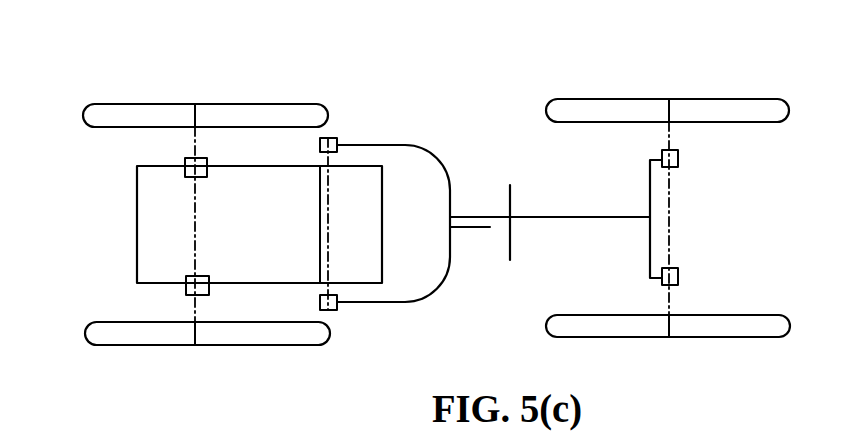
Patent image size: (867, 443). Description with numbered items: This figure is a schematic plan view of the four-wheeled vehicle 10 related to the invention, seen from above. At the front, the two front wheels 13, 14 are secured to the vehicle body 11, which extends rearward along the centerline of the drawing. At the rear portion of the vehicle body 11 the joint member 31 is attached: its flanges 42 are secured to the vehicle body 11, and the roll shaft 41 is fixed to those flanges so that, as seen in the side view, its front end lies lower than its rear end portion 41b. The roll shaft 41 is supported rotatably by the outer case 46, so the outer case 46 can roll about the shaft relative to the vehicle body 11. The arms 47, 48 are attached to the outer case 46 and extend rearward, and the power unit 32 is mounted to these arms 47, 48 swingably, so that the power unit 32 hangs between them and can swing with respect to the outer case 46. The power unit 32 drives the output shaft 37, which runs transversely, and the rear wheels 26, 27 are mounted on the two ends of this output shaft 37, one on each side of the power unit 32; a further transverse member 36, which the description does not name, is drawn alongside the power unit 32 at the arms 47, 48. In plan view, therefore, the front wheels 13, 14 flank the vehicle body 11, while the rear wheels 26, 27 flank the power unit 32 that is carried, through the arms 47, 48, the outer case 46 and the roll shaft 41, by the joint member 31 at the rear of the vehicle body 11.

The four-wheeled vehicle 10 is at (411, 220).
The vehicle body 11 is at (583, 217).
The front wheel 13 is at (732, 99).
The front wheel 14 is at (740, 337).
The rear wheel 26 is at (228, 104).
The rear wheel 27 is at (232, 345).
The joint member 31 is at (438, 215).
The power unit 32 is at (137, 215).
The drive axle 36 is at (327, 272).
The output shaft 37 is at (197, 307).
The roll shaft 41 is at (497, 214).
The rear end portion 41b is at (462, 233).
The flange 42 is at (520, 166).
The outer case 46 is at (474, 233).
The arm 47 is at (372, 145).
The arm 48 is at (387, 307).